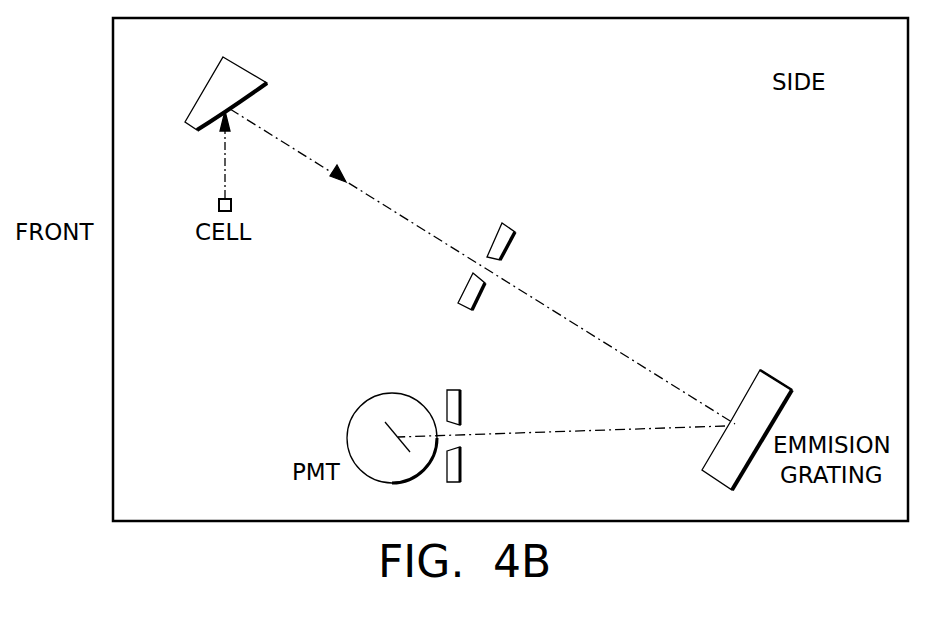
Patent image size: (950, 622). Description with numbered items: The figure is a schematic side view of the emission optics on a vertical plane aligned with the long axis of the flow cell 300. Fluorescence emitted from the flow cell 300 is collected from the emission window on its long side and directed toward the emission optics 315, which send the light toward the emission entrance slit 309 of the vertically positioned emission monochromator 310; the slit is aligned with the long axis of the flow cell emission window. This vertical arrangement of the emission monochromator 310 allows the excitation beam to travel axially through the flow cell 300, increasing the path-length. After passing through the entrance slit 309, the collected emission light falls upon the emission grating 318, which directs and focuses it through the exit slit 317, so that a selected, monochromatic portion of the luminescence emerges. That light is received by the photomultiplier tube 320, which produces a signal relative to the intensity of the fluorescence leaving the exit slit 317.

The flow cell 300 is at (231, 205).
The emission entrance slit 309 is at (495, 240).
The emission monochromator 310 is at (594, 380).
The emission optics 315 is at (266, 81).
The exit slit 317 is at (454, 390).
The emission grating 318 is at (776, 374).
The photomultiplier tube 320 is at (385, 393).